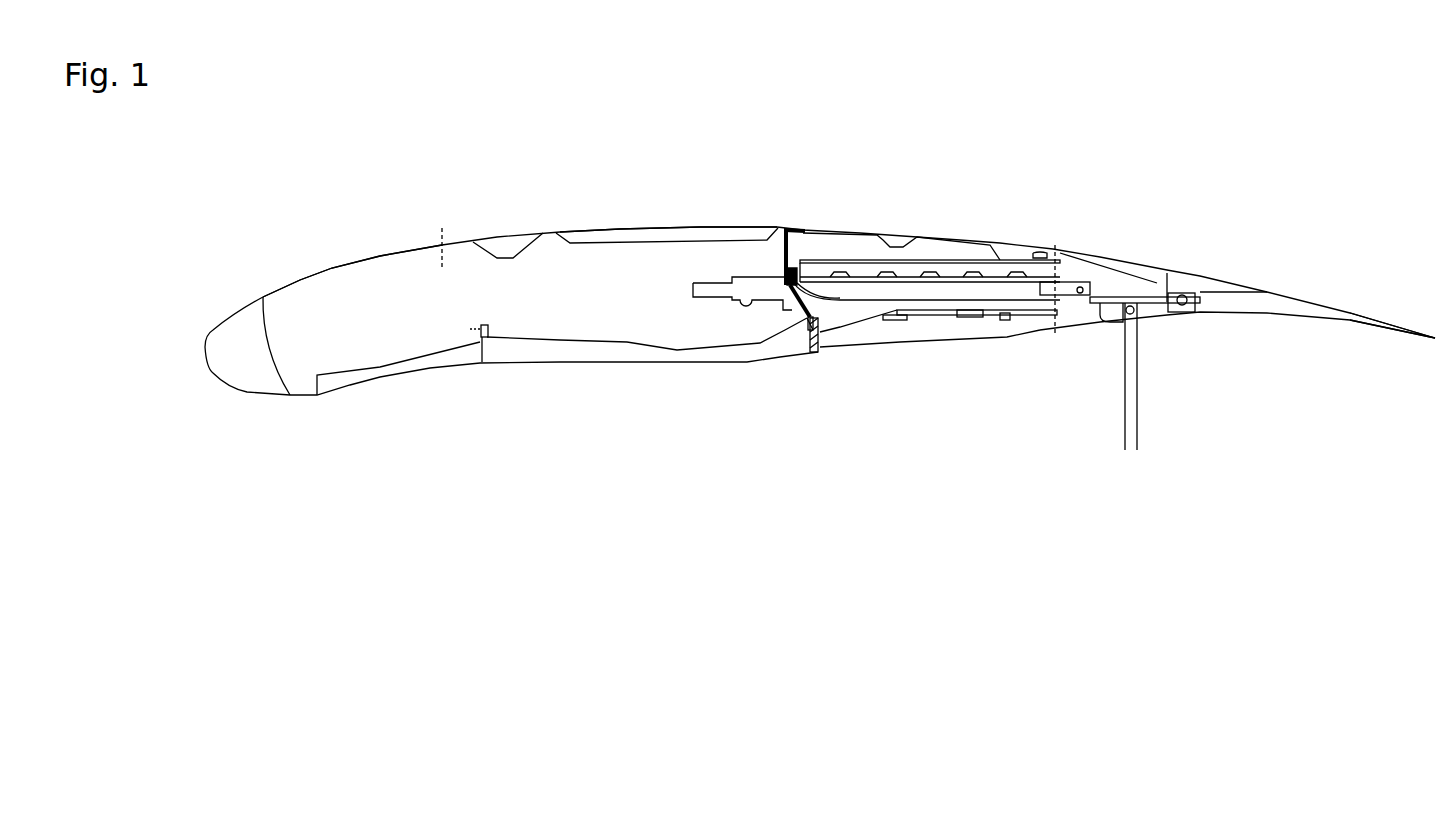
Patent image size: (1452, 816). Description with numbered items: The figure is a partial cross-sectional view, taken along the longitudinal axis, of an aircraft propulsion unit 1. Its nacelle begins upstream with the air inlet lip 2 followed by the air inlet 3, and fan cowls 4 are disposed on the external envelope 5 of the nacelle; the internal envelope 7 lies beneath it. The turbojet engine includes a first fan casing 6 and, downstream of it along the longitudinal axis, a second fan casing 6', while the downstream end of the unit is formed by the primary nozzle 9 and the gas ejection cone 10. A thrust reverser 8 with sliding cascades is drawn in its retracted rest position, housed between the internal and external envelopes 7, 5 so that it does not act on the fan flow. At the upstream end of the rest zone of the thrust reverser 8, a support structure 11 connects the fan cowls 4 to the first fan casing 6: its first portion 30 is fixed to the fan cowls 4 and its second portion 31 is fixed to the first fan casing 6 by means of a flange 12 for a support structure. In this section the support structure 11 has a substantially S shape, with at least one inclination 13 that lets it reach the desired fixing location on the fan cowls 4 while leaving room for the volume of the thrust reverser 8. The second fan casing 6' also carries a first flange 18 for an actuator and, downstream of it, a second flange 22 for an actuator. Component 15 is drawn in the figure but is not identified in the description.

The aircraft propulsion unit 1 is at (1050, 185).
The air inlet lip 2 is at (229, 270).
The air inlet 3 is at (313, 240).
The fan cowls 4 is at (740, 195).
The external envelope 5 is at (502, 200).
The first fan casing 6 is at (554, 379).
The second fan casing 6' is at (930, 365).
The internal envelope 7 is at (494, 388).
The thrust reverser 8 is at (924, 245).
The primary nozzle 9 is at (1246, 345).
The gas ejection cone 10 is at (1421, 362).
The support structure 11 is at (808, 205).
The flange for a support structure 12 is at (812, 337).
The inclination 13 is at (788, 303).
The actuator block 15 is at (696, 311).
The first flange for an actuator 18 is at (815, 328).
The second flange for an actuator 22 is at (900, 323).
The first portion of the support structure 30 is at (786, 205).
The second portion of the support structure 31 is at (797, 345).